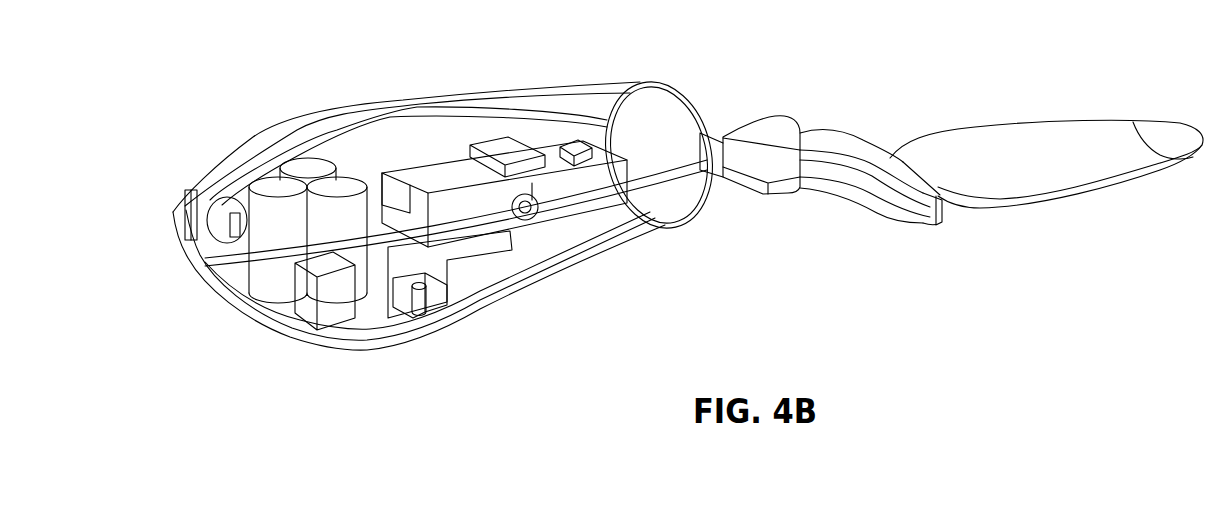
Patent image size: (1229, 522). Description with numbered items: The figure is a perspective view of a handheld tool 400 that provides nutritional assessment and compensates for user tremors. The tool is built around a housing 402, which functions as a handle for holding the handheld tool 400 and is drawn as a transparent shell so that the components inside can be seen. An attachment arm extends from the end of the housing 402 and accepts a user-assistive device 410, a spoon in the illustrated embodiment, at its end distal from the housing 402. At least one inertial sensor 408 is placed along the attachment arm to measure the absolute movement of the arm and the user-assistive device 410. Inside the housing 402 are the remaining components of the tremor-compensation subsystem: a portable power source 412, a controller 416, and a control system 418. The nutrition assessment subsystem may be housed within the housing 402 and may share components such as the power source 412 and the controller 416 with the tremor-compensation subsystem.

The handheld tool 400 is at (670, 215).
The housing 402 is at (137, 167).
The inertial sensor 408 is at (938, 234).
The user-assistive device 410 is at (1030, 169).
The portable power source 412 is at (249, 293).
The controller 416 is at (518, 264).
The control system 418 is at (499, 272).